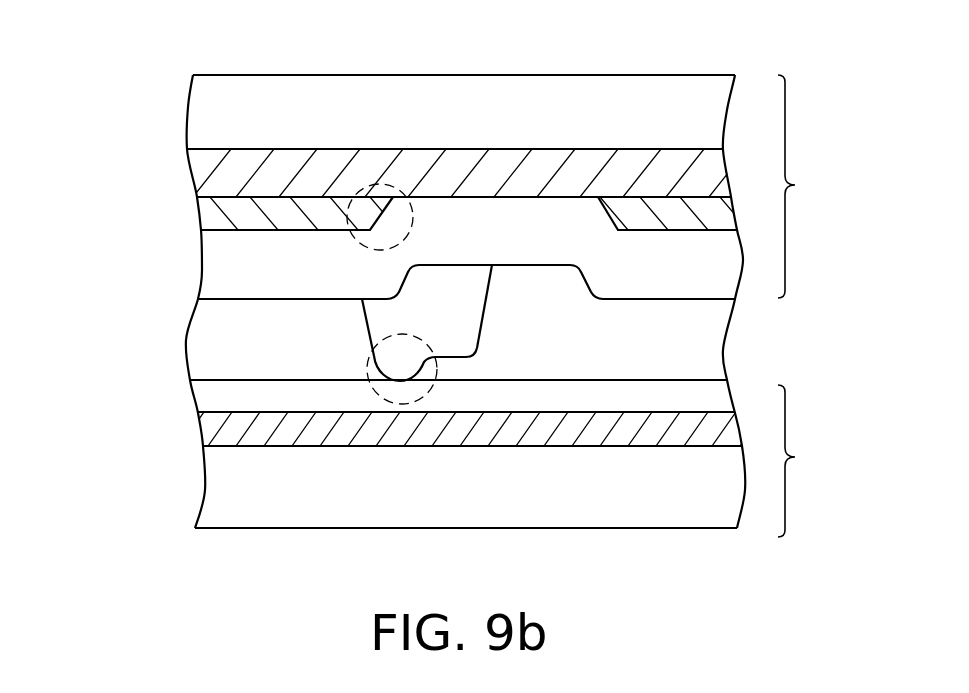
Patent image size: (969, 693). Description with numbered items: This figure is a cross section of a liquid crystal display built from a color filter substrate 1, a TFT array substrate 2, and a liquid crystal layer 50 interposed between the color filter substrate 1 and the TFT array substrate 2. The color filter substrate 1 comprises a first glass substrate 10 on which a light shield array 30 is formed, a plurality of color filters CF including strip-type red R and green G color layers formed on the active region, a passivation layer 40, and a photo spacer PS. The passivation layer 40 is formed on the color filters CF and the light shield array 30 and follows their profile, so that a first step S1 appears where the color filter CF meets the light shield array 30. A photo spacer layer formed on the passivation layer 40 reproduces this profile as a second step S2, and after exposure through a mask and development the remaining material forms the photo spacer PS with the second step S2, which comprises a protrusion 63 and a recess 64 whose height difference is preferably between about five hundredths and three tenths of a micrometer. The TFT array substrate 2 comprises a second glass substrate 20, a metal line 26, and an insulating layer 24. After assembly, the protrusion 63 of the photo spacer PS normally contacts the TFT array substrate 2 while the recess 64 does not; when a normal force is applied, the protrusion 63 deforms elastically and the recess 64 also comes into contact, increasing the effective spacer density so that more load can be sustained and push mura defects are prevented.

The first glass substrate 10 is at (212, 105).
The light shield array 30 is at (212, 170).
The color filters CF is at (413, 121).
The red color layer R is at (258, 215).
The green color layer G is at (658, 215).
The first step S1 is at (380, 172).
The passivation layer 40 is at (216, 270).
The photo spacer PS is at (315, 421).
The protrusion 63 is at (390, 380).
The recess 64 is at (448, 357).
The second step S2 is at (404, 410).
The liquid crystal layer 50 is at (208, 342).
The insulating layer 24 is at (217, 397).
The metal line 26 is at (218, 430).
The second glass substrate 20 is at (217, 488).
The color filter substrate 1 is at (803, 186).
The TFT array substrate 2 is at (803, 461).